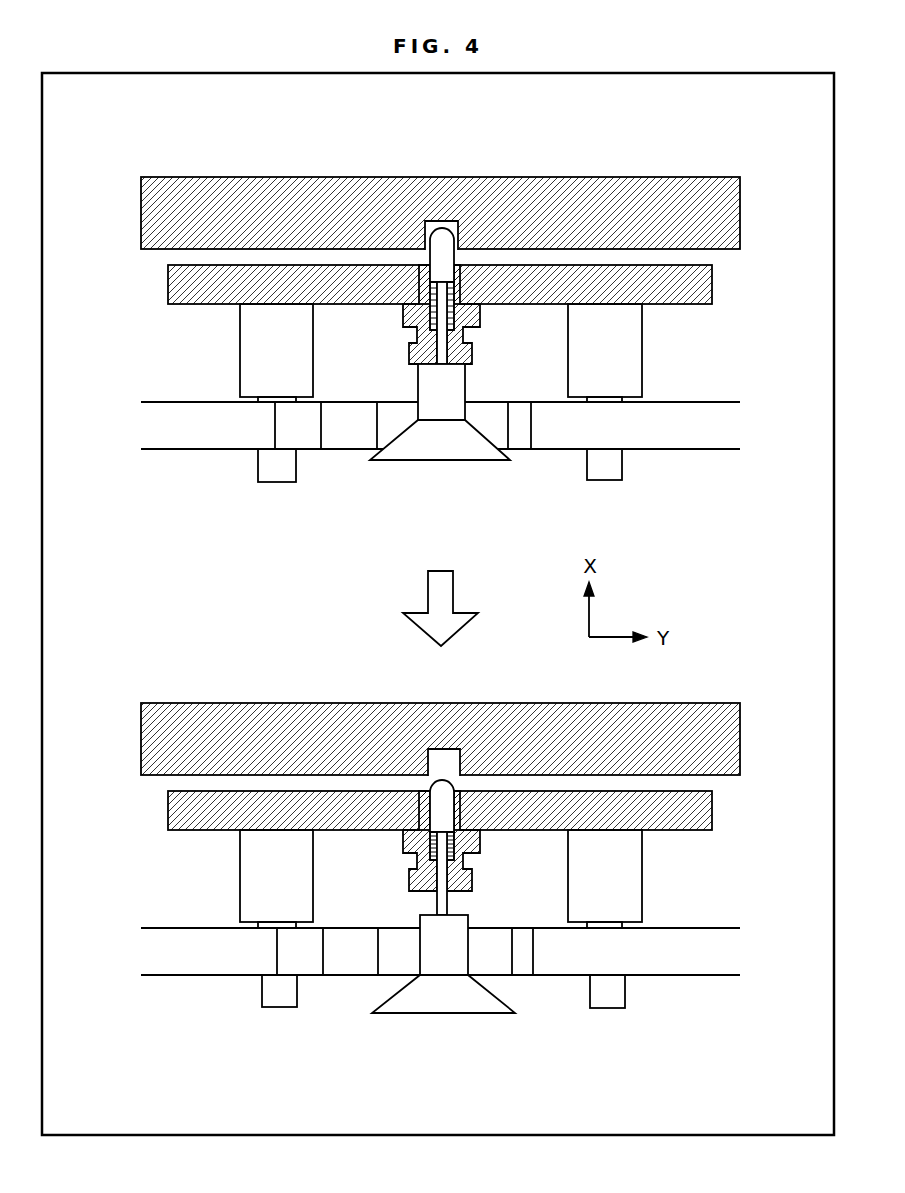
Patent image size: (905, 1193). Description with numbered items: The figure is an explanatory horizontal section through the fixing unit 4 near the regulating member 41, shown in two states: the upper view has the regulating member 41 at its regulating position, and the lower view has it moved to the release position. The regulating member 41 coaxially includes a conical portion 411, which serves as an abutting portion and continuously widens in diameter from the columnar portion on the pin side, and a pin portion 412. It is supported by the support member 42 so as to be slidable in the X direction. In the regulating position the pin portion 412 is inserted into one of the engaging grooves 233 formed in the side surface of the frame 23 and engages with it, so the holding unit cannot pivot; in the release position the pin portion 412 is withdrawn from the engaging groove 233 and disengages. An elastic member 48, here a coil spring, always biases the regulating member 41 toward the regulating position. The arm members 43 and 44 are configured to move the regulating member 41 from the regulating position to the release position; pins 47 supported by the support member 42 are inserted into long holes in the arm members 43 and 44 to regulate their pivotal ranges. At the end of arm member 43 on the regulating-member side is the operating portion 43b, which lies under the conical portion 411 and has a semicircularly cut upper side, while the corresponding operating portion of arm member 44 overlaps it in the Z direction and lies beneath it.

The fixing unit 4 is at (440, 608).
The frame 23 is at (271, 190).
The engaging groove 233 is at (430, 225).
The pin portion 412 is at (444, 222).
The support member 42 is at (680, 305).
The arm member 43 is at (187, 440).
The operating portion 43b is at (398, 405).
The arm member 44 is at (685, 440).
The pin 47 is at (277, 482).
The elastic member 48 is at (460, 318).
The regulating member 41 is at (438, 462).
The conical portion 411 is at (480, 443).